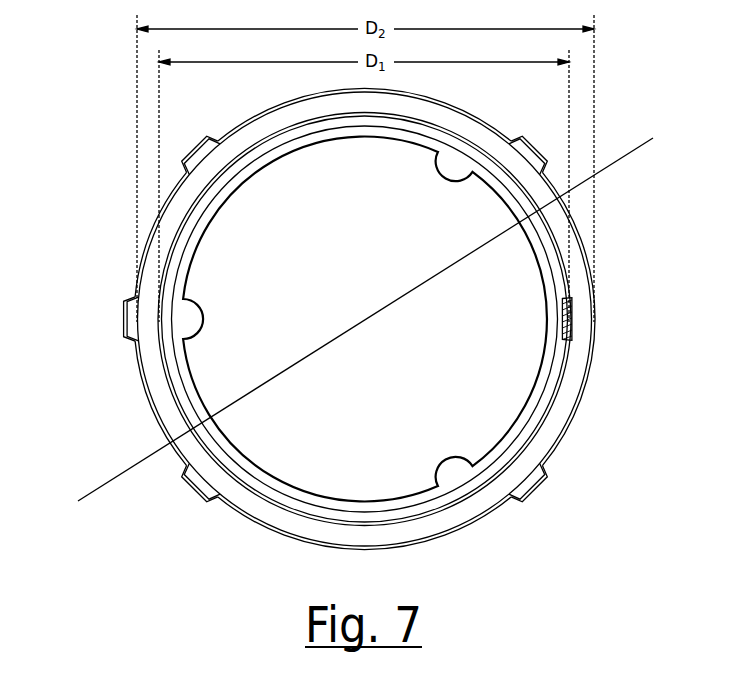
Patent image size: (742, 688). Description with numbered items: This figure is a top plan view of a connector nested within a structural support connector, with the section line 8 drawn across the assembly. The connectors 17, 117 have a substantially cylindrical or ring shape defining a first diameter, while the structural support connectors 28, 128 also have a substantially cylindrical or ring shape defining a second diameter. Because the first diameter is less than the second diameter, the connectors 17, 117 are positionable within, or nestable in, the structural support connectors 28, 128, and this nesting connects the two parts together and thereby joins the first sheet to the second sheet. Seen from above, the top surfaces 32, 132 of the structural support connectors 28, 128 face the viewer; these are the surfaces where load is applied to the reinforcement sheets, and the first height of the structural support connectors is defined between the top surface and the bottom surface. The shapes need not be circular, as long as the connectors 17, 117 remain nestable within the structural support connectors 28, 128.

The section line 8- 8 is at (78, 501).
The connector 17 is at (392, 346).
The connector 117 is at (422, 500).
The structural support connector 28 is at (422, 318).
The structural support connector 128 is at (580, 365).
The top surface 32 is at (641, 299).
The top surface 132 is at (578, 296).